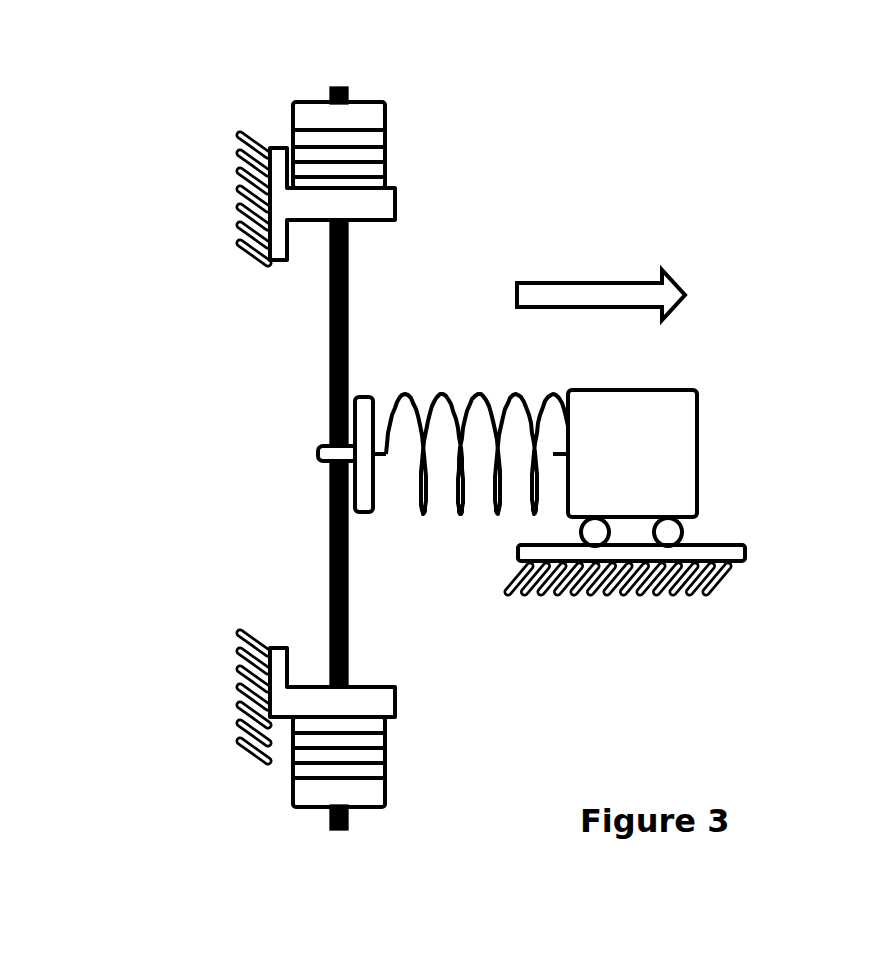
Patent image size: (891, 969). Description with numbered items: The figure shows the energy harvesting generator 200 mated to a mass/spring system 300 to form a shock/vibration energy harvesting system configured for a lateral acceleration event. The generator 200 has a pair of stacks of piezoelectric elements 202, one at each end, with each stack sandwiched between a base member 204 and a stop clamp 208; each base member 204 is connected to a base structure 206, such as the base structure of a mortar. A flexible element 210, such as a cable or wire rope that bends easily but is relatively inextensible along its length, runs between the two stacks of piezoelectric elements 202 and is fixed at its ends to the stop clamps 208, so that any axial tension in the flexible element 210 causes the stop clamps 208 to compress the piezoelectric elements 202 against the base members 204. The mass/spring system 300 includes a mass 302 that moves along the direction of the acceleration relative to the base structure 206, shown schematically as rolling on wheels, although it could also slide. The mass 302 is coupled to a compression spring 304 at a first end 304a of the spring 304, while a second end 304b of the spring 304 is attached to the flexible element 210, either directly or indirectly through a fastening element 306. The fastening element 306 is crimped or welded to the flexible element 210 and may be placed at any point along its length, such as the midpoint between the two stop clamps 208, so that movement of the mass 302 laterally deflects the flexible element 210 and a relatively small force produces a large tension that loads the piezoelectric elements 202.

The energy harvesting generator 200 is at (175, 95).
The piezoelectric elements 202 is at (408, 127).
The base member 204 is at (414, 219).
The base structure 206 is at (193, 191).
The stop clamp 208 is at (402, 103).
The flexible element 210 is at (304, 323).
The mass/spring system 300 is at (777, 333).
The mass 302 is at (712, 466).
The compression spring 304 is at (449, 524).
The first end of the spring 304a is at (559, 411).
The second end of the spring 304b is at (388, 438).
The fastening element 306 is at (309, 439).